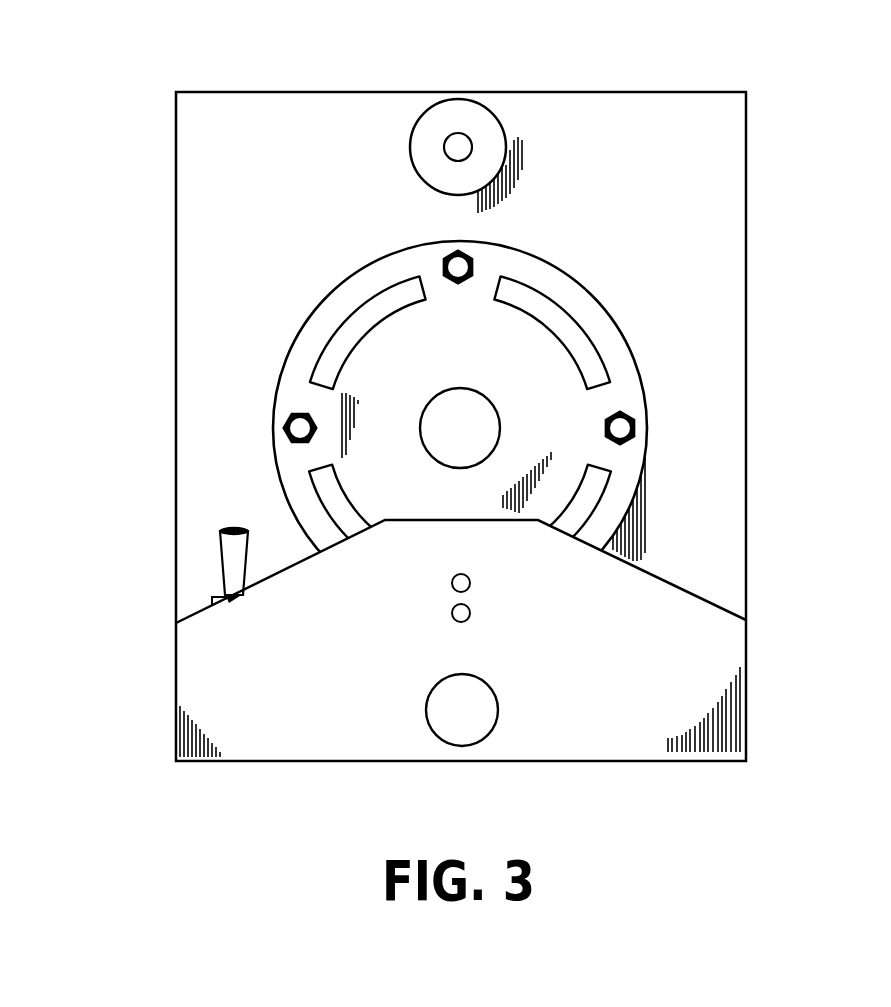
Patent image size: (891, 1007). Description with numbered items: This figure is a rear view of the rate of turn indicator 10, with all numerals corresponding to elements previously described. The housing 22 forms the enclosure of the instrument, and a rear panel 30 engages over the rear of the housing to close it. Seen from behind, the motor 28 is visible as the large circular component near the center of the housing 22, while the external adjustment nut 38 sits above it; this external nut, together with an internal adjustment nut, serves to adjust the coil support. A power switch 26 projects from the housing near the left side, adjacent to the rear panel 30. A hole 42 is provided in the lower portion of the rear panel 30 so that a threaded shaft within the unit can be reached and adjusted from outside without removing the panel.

The rate of turn indicator 10 is at (792, 76).
The housing 22 is at (296, 209).
The power switch 26 is at (171, 552).
The motor 28 is at (464, 428).
The rear panel 30 is at (590, 620).
The external adjustment nut 38 is at (478, 135).
The hole 42 is at (499, 710).